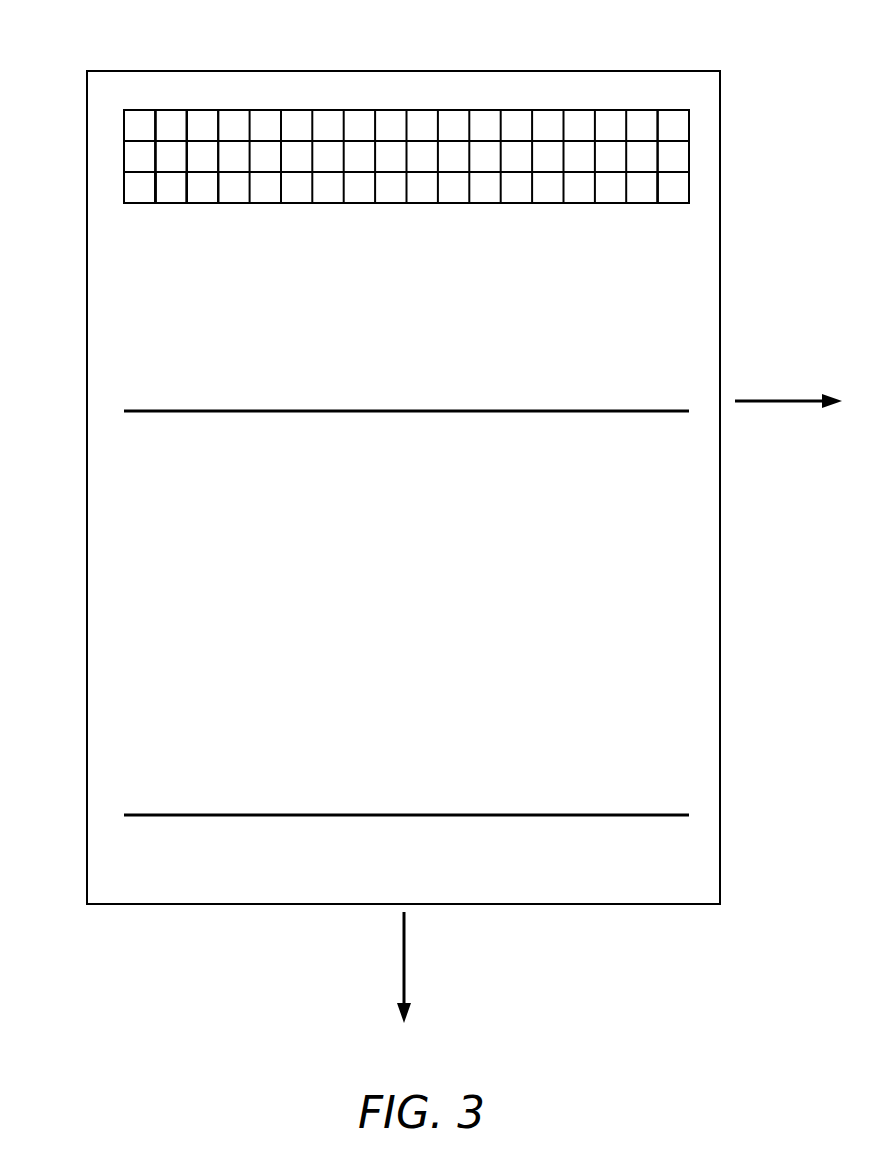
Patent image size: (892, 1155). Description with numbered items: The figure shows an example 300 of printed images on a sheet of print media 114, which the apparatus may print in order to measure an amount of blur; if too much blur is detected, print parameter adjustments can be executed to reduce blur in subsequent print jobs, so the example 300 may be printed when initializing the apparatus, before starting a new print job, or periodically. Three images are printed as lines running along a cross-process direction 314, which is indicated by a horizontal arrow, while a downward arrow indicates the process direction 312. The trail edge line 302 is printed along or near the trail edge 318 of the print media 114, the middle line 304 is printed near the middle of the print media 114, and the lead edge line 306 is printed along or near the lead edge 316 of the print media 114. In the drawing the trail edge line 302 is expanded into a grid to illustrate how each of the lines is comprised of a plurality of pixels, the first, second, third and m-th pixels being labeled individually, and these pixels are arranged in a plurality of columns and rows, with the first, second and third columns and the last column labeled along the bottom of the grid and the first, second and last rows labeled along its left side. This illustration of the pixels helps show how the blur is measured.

The example 300 is at (728, 55).
The print media 114 is at (620, 71).
The trail edge 318 is at (403, 71).
The lead edge 316 is at (587, 904).
The trail edge line 302 is at (690, 155).
The middle line 304 is at (582, 410).
The lead edge line 306 is at (582, 815).
The cross-process direction 314 is at (770, 399).
The process direction 312 is at (407, 966).